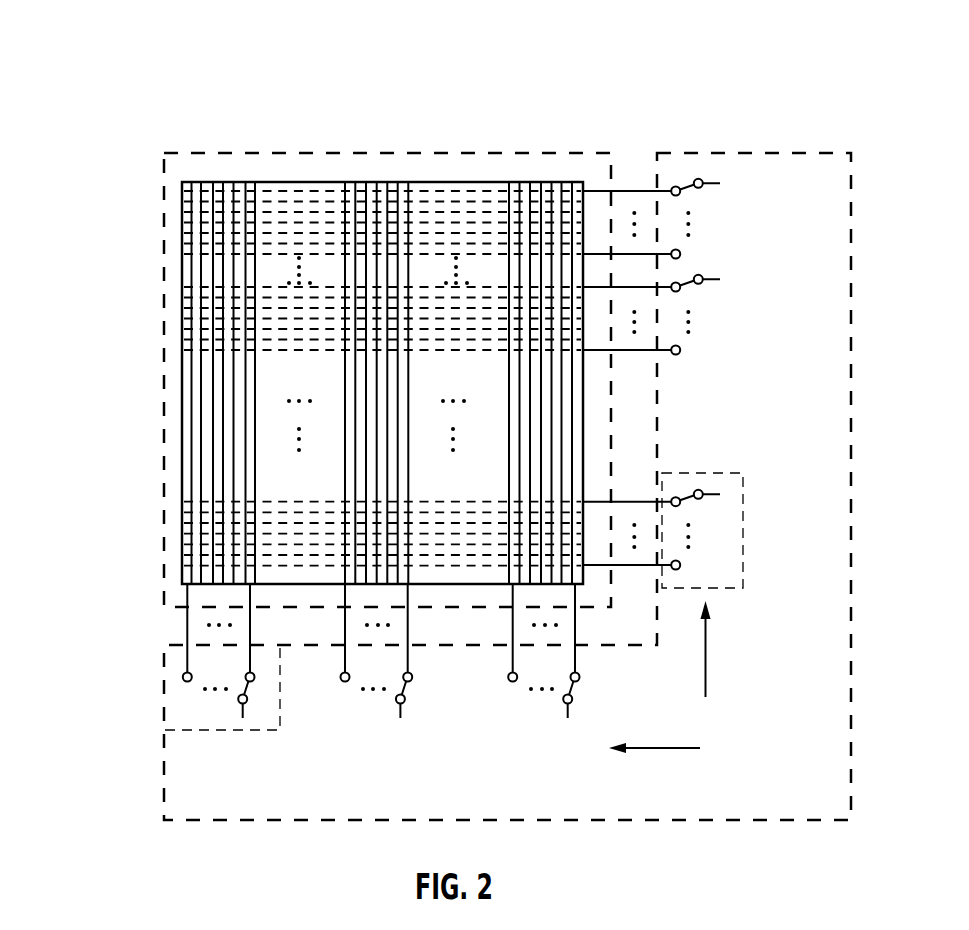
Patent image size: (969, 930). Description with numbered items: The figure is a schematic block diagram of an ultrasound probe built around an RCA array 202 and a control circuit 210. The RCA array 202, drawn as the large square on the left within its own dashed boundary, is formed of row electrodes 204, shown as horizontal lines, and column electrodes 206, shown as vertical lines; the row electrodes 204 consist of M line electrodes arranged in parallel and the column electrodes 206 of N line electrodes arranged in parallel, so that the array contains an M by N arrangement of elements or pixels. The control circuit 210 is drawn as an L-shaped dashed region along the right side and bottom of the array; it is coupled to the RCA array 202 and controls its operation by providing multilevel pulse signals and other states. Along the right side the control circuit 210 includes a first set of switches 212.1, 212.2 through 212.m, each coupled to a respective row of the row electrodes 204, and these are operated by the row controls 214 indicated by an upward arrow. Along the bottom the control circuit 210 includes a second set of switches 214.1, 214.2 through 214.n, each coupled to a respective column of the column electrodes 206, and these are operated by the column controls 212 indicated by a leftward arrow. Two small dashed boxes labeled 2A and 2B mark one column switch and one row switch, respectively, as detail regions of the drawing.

The RCA array 202 is at (221, 151).
The row electrodes 204 is at (264, 182).
The column electrodes 206 is at (170, 422).
The control circuit 210 is at (853, 198).
The column controls 212 is at (720, 764).
The first switch of the first set of switches 212.1 is at (716, 224).
The second switch of the first set of switches 212.2 is at (716, 314).
The m-th switch of the first set of switches 212.m is at (716, 535).
The row controls 214 is at (768, 653).
The first switch of the second set of switches 214.1 is at (218, 725).
The second switch of the second set of switches 214.2 is at (382, 725).
The n-th switch of the second set of switches 214.n is at (544, 725).
The detail region of FIG. 2A is at (282, 716).
The detail region of FIG. 2B is at (715, 472).